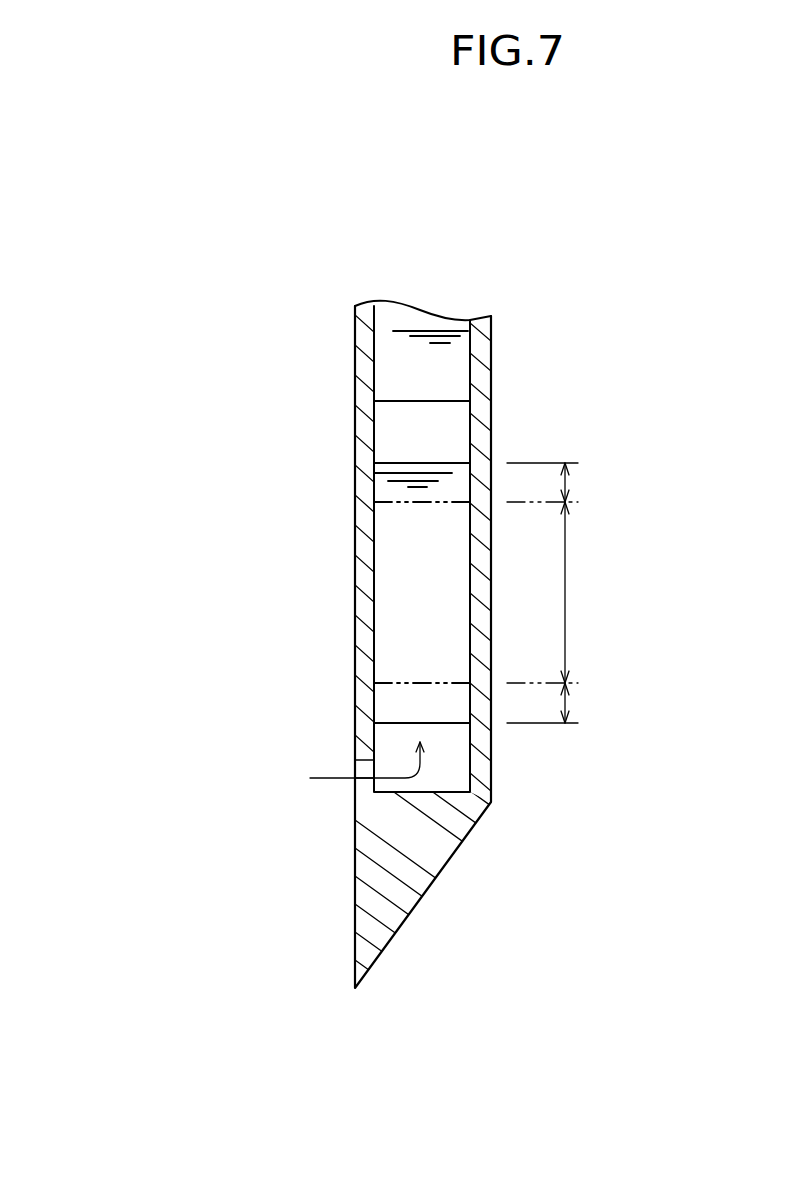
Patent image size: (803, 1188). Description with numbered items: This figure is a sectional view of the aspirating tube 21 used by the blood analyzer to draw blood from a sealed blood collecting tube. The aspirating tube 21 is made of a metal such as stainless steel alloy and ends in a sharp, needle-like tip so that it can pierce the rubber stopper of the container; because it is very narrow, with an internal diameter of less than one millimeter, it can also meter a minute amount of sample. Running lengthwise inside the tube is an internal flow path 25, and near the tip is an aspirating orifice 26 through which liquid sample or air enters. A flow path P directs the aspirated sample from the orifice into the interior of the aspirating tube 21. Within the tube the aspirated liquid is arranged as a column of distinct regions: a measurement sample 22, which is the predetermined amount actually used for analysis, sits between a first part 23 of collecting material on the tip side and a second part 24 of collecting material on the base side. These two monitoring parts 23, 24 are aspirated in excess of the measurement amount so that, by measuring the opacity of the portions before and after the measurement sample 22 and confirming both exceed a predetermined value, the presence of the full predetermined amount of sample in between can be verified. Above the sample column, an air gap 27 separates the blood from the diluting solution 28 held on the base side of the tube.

The aspirating tube 21 is at (361, 381).
The measurement sample 22 is at (566, 605).
The first part of collecting material 23 is at (566, 702).
The second part of collecting material 24 is at (566, 482).
The internal flow path 25 is at (395, 741).
The aspirating orifice 26 is at (348, 770).
The air gap 27 is at (450, 437).
The diluting solution 28 is at (450, 372).
The flow path P is at (443, 772).